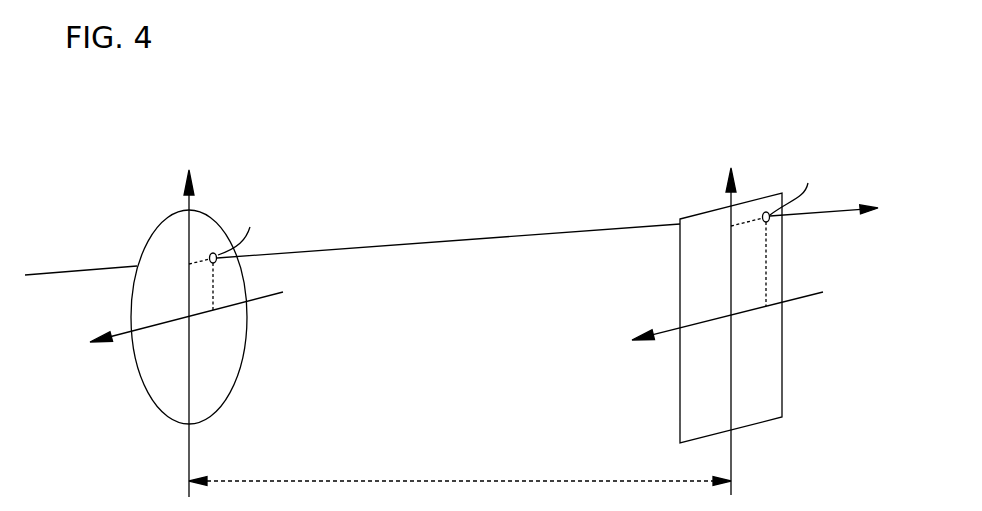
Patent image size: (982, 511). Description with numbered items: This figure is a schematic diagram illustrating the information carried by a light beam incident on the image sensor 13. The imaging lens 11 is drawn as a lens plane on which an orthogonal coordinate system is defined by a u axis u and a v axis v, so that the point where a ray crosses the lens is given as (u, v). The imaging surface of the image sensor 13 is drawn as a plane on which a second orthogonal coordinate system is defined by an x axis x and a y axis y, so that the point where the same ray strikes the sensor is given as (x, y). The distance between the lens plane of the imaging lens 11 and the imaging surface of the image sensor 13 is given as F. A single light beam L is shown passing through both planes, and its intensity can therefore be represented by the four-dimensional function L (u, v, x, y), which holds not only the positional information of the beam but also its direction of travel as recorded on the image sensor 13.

The imaging lens 11 is at (160, 226).
The image sensor 13 is at (782, 390).
The four-dimensional function L (u, v, x, y) L is at (362, 247).
The distance F is at (460, 469).
The u coordinate u is at (190, 320).
The v coordinate v is at (175, 322).
The x coordinate x is at (732, 318).
The y coordinate y is at (717, 321).